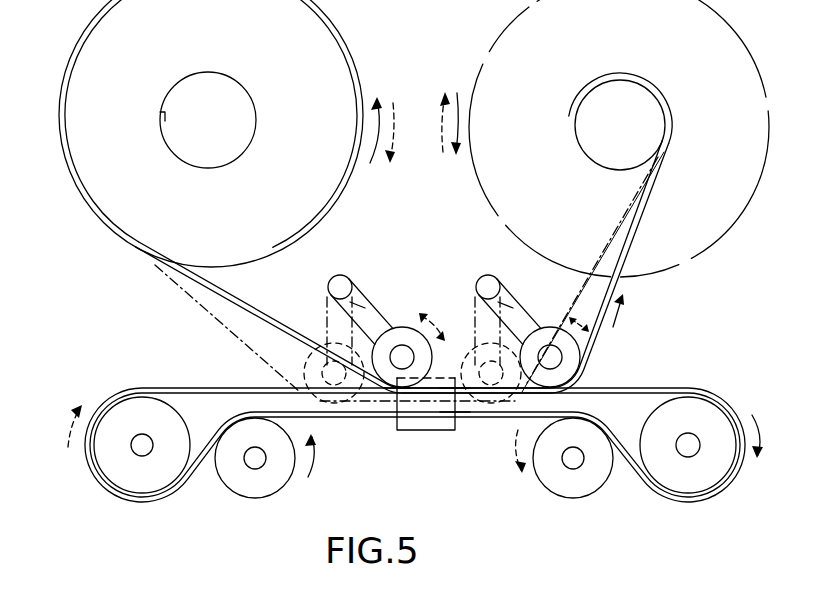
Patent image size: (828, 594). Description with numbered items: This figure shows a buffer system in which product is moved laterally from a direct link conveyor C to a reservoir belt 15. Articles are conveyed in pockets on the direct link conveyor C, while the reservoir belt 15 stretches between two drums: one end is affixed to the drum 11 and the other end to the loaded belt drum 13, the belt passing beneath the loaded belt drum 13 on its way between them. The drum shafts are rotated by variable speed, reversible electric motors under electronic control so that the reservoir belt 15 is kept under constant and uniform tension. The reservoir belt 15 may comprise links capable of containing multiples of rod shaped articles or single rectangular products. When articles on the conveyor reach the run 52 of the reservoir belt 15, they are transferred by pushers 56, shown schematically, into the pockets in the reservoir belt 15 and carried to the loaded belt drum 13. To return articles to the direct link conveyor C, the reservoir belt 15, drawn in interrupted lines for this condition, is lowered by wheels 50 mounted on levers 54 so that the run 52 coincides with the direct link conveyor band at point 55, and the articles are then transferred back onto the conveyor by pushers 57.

The drum 11 is at (210, 87).
The loaded belt drum 13 is at (634, 110).
The reservoir belt 15 is at (258, 309).
The wheels 50 is at (404, 326).
The levers 54 is at (364, 306).
The pushers 56 is at (455, 386).
The run 52 is at (396, 392).
The point 55 is at (462, 417).
The pushers 57 is at (423, 432).
The direct link conveyor C is at (208, 388).